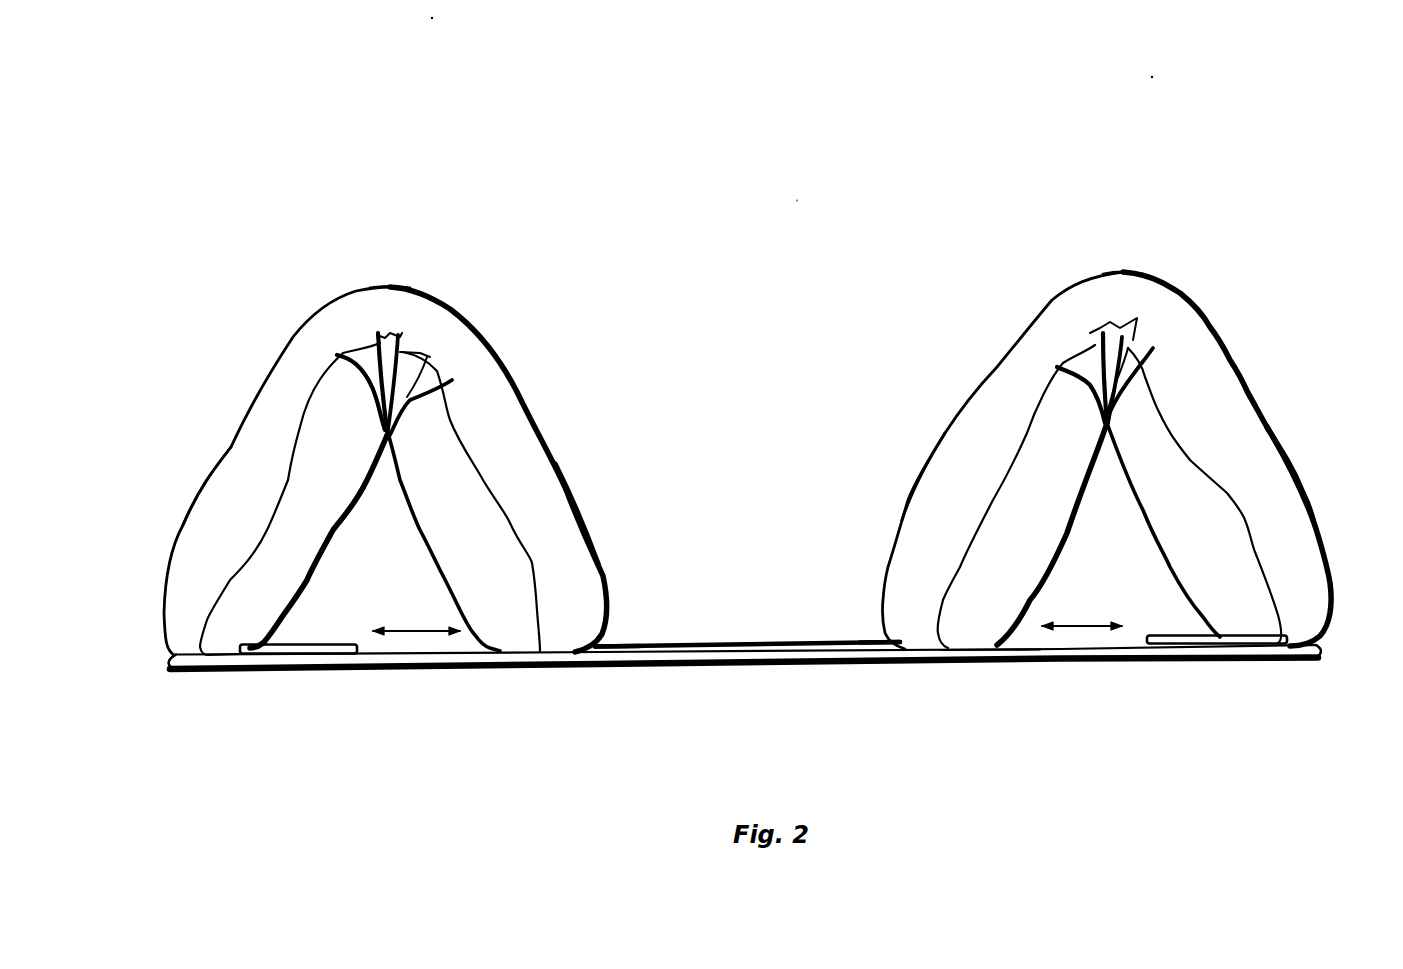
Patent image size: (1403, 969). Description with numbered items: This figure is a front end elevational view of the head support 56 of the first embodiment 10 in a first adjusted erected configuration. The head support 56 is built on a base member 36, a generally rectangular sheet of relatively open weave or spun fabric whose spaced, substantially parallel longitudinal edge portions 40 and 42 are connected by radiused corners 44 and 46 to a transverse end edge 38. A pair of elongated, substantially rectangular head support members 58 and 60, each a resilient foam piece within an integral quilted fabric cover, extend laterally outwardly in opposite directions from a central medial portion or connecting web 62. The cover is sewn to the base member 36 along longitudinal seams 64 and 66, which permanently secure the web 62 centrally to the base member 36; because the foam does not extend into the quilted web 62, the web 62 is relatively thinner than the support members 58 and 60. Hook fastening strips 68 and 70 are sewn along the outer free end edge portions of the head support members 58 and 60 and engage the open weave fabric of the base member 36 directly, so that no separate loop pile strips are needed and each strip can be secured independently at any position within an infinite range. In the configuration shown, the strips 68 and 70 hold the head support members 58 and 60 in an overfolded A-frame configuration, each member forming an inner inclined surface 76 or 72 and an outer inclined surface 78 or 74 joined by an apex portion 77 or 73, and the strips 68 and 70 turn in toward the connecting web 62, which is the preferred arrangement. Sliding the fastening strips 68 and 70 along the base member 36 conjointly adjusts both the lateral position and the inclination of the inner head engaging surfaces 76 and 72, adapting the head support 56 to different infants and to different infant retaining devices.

The first embodiment 10 is at (432, 735).
The base member 36 is at (995, 663).
The transverse end edge 38 is at (705, 665).
The longitudinal edge portion 40 is at (168, 668).
The longitudinal edge portion 42 is at (1323, 648).
The radiused corner 44 is at (183, 675).
The radiused corner 46 is at (1290, 662).
The head support 56 is at (796, 201).
The head support member 58 is at (1105, 412).
The head support member 60 is at (383, 420).
The connecting web 62 is at (750, 642).
The longitudinal seam 64 is at (893, 640).
The longitudinal seam 66 is at (597, 640).
The hook fastening strip 68 is at (1157, 636).
The hook fastening strip 70 is at (317, 645).
The inner inclined surface 72 is at (577, 495).
The apex portion 73 is at (392, 287).
The outer inclined surface 74 is at (202, 495).
The inner inclined surface 76 is at (913, 495).
The apex portion 77 is at (1127, 270).
The outer inclined surface 78 is at (1298, 477).